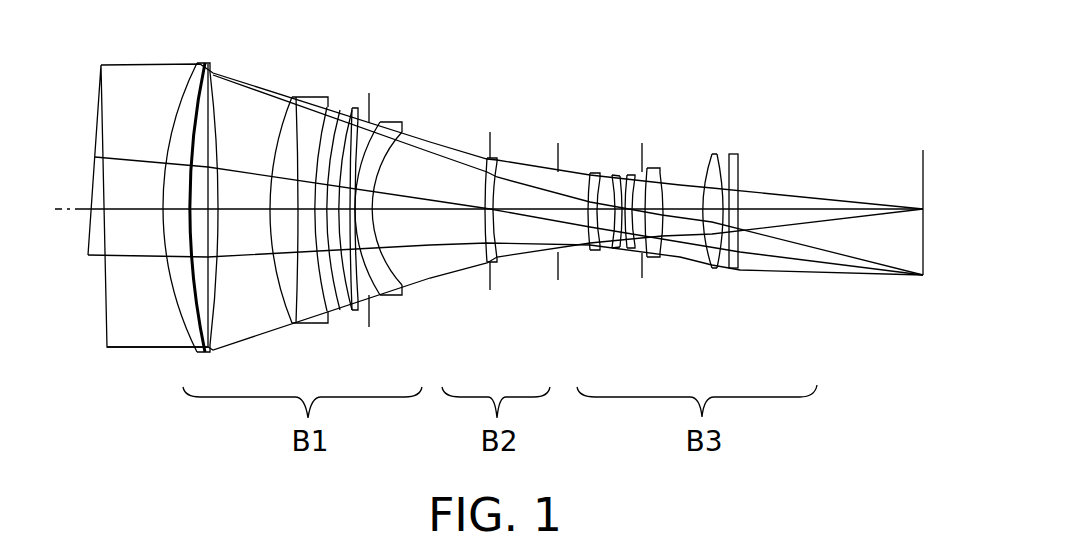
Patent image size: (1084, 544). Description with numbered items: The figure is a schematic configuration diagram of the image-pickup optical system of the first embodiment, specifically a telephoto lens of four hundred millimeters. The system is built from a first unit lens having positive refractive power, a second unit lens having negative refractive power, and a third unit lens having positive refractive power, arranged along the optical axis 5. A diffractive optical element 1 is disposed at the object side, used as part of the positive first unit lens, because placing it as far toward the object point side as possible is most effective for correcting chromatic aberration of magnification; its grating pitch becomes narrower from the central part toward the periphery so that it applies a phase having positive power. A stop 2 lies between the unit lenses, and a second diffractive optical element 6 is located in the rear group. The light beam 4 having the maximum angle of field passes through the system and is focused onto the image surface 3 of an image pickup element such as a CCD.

The diffractive optical element 1 is at (207, 113).
The stop 2 is at (558, 160).
The image surface 3 is at (923, 165).
The light beam having the maximum angle of field 4 is at (753, 255).
The optical axis 5 is at (803, 212).
The second diffractive optical element 6 is at (653, 168).